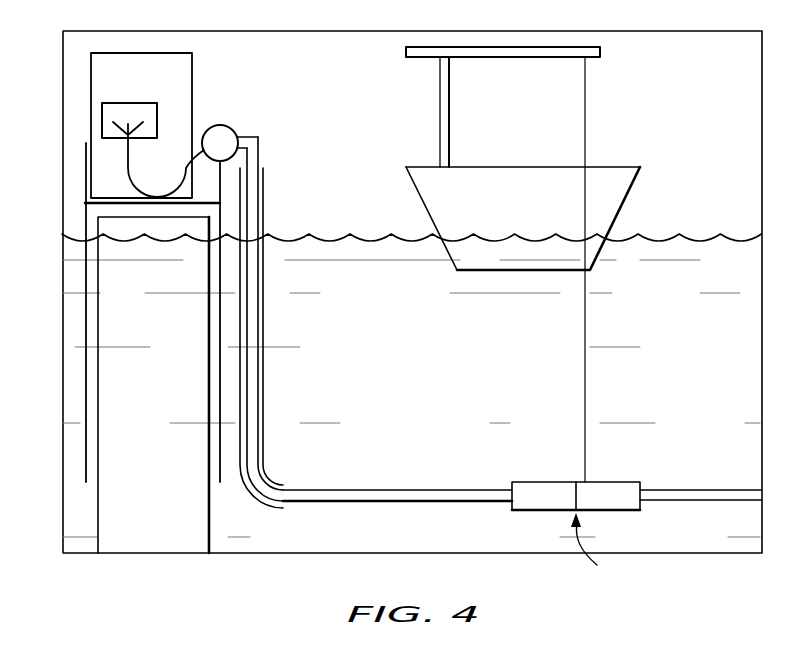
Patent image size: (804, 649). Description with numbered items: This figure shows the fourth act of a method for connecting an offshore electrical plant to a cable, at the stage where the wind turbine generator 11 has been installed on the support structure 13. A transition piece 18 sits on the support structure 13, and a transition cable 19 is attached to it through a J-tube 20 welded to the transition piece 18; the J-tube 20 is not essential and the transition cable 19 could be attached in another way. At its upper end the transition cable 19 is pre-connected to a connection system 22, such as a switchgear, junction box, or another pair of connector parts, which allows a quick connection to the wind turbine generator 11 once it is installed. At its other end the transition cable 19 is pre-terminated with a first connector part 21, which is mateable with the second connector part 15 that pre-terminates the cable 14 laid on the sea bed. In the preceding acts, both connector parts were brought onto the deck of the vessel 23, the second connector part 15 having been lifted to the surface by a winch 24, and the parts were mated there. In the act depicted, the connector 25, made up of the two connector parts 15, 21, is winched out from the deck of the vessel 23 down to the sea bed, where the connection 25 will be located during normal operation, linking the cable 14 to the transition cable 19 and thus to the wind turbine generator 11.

The wind turbine generator 11 is at (192, 65).
The connection system 22 is at (102, 116).
The transition piece 18 is at (86, 385).
The support structure 13 is at (97, 505).
The J-tube 20 is at (264, 378).
The transition cable 19 is at (396, 489).
The first connector part 21 is at (534, 482).
The second connector part 15 is at (617, 482).
The cable 14 is at (706, 490).
The connector 25 is at (589, 553).
The vessel 23 is at (637, 182).
The winch 24 is at (585, 73).